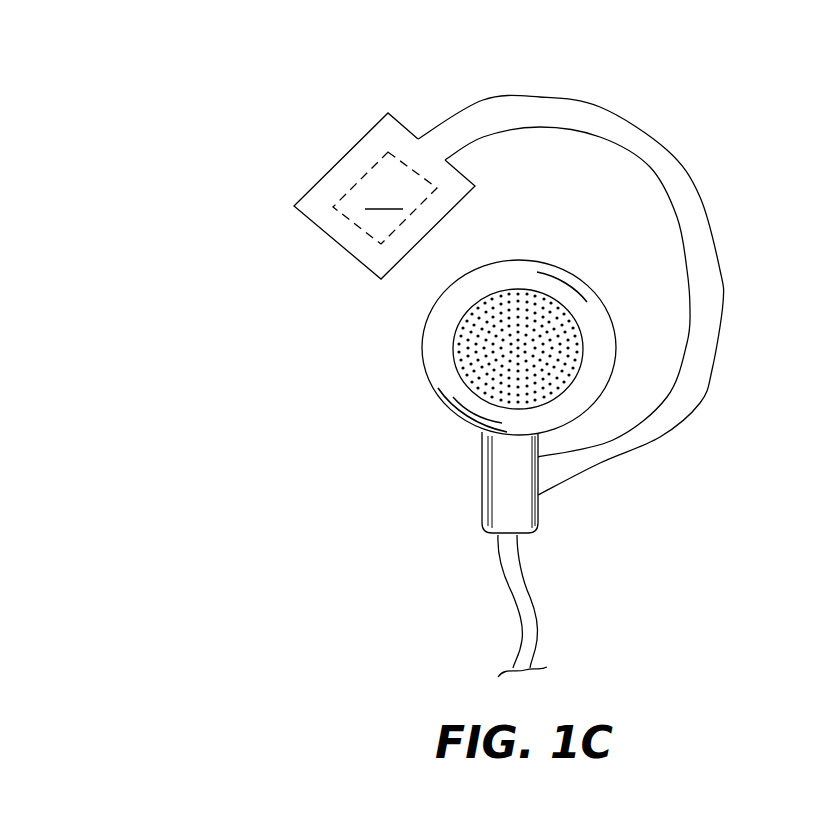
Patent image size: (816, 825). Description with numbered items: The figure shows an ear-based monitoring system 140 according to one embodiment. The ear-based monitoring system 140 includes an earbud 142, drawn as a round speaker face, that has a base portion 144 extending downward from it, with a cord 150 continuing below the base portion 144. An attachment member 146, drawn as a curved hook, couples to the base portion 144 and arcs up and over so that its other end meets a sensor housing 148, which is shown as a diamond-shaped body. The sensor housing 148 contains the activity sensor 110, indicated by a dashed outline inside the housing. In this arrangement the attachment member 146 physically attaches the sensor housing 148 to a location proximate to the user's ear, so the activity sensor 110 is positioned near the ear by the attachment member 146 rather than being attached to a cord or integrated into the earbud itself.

The ear-based monitoring system 140 is at (160, 119).
The sensor housing 148 is at (350, 196).
The activity sensor 110 is at (337, 162).
The attachment member 146 is at (560, 110).
The earbud 142 is at (425, 355).
The base portion 144 is at (490, 483).
The cable 150 is at (518, 618).